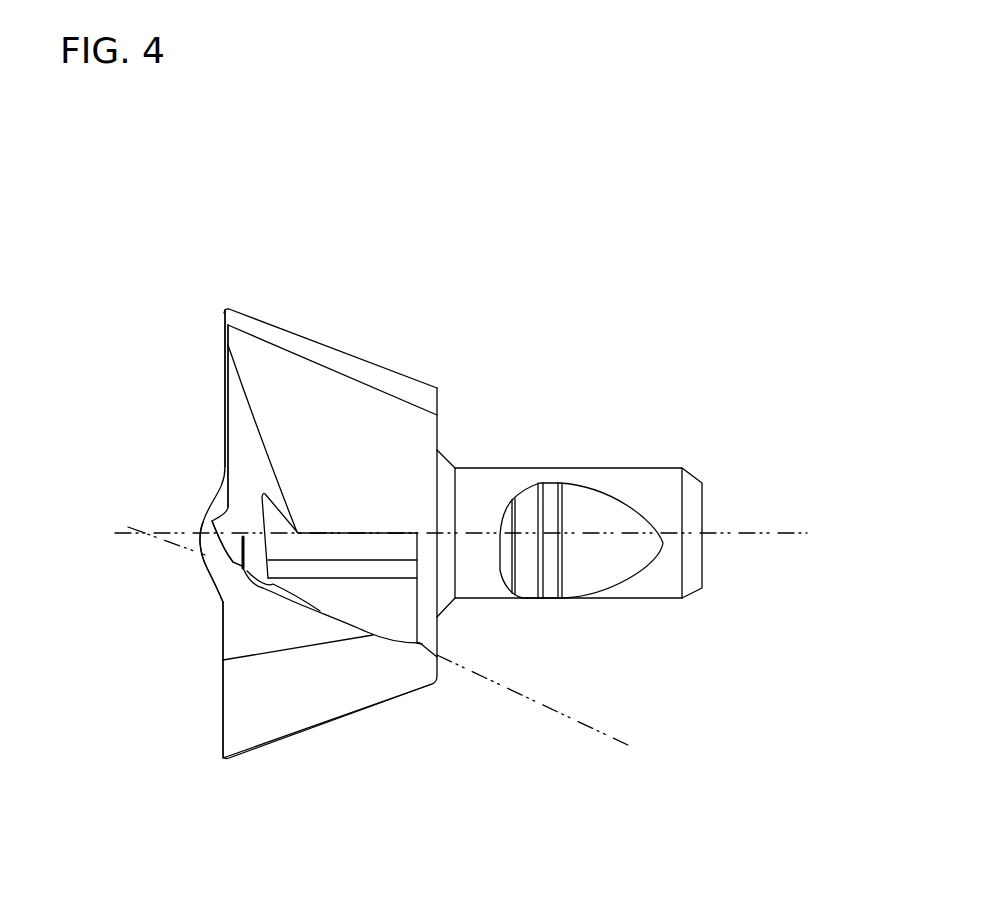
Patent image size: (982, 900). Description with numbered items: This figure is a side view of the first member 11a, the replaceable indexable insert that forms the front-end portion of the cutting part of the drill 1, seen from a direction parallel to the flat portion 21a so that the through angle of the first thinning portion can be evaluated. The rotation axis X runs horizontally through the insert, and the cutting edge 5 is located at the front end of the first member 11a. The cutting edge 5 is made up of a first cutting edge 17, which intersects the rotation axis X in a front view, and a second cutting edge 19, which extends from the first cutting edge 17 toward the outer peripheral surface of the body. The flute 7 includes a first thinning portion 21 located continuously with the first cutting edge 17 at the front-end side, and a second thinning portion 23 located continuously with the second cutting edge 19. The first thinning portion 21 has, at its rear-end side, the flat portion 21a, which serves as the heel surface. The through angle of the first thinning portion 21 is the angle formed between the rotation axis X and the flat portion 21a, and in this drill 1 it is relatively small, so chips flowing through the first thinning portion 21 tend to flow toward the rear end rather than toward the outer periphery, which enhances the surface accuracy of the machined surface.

The drill 1 is at (263, 241).
The first member 11a is at (578, 533).
The cutting edge 5 is at (225, 400).
The second cutting edge 19 is at (225, 534).
The first cutting edge 17 is at (185, 561).
The flute 7 is at (217, 557).
The first thinning portion 21 is at (331, 618).
The flat portion 21a is at (340, 612).
The second thinning portion 23 is at (298, 647).
The rotation axis X is at (483, 537).